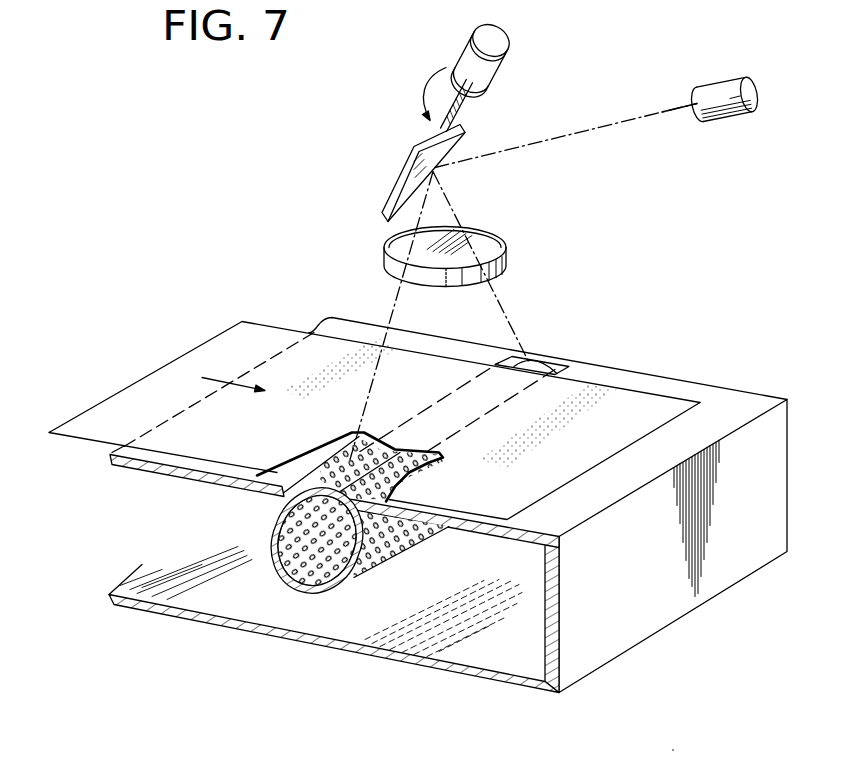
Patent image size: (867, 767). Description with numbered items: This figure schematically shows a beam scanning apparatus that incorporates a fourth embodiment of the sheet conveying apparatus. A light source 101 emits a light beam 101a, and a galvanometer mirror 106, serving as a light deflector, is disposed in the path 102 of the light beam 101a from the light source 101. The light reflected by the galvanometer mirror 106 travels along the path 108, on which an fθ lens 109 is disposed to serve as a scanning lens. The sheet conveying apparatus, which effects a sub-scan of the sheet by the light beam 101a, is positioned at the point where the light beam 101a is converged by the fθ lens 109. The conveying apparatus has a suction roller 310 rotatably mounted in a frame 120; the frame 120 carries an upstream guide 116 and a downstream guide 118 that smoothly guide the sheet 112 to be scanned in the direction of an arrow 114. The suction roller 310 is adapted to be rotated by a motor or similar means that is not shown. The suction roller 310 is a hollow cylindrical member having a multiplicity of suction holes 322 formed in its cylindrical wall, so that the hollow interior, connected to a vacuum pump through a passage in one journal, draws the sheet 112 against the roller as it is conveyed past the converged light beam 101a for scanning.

The light source 101 is at (700, 83).
The light beam 101a is at (651, 115).
The path of light beam 102 is at (611, 125).
The galvanometer mirror 106 is at (397, 173).
The path of reflected light 108 is at (388, 315).
The fθ lens 109 is at (503, 247).
The sheet 112 is at (168, 372).
The arrow 114 is at (223, 383).
The upstream guide 116 is at (182, 470).
The downstream guide 118 is at (568, 513).
The frame 120 is at (373, 658).
The suction roller 310 is at (300, 578).
The suction holes 322 is at (331, 484).